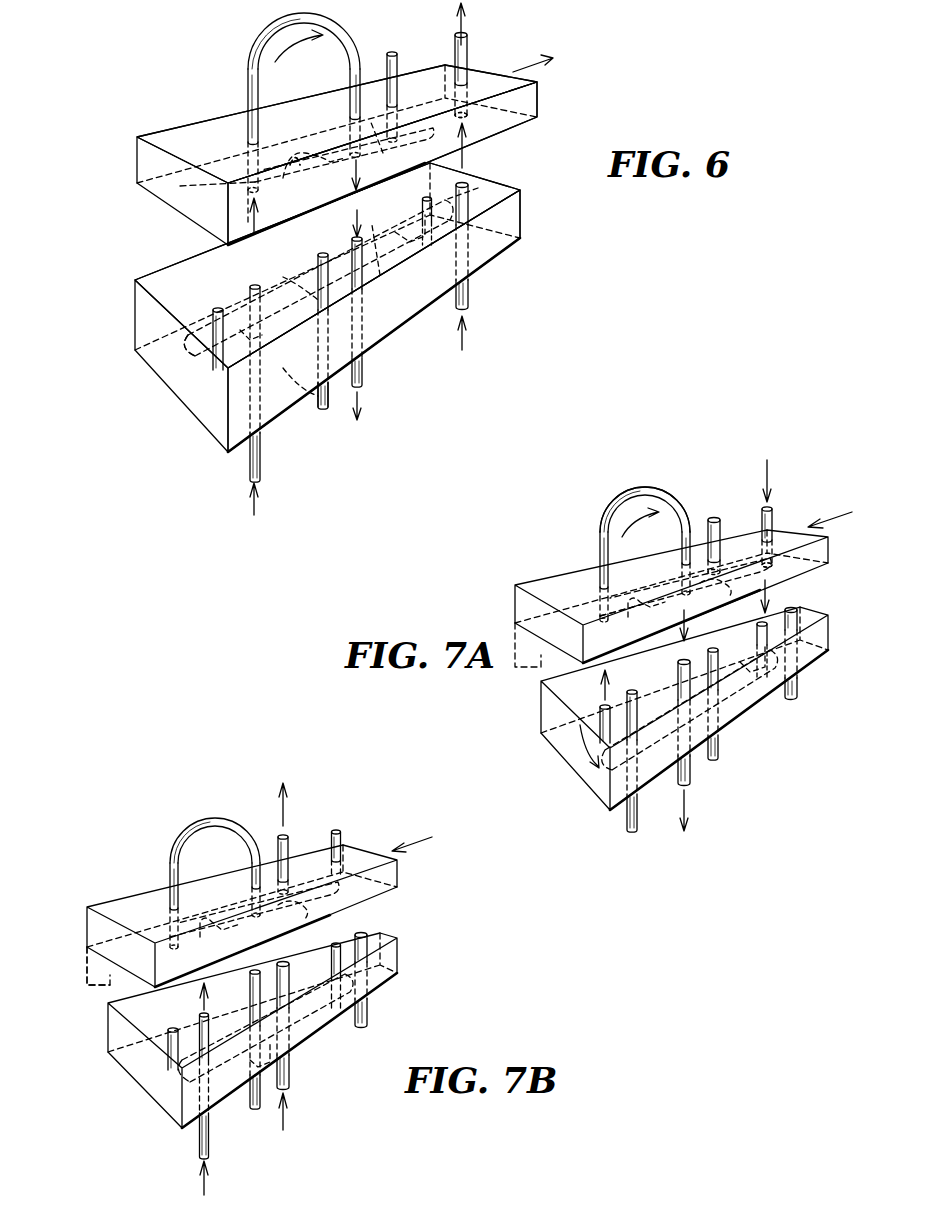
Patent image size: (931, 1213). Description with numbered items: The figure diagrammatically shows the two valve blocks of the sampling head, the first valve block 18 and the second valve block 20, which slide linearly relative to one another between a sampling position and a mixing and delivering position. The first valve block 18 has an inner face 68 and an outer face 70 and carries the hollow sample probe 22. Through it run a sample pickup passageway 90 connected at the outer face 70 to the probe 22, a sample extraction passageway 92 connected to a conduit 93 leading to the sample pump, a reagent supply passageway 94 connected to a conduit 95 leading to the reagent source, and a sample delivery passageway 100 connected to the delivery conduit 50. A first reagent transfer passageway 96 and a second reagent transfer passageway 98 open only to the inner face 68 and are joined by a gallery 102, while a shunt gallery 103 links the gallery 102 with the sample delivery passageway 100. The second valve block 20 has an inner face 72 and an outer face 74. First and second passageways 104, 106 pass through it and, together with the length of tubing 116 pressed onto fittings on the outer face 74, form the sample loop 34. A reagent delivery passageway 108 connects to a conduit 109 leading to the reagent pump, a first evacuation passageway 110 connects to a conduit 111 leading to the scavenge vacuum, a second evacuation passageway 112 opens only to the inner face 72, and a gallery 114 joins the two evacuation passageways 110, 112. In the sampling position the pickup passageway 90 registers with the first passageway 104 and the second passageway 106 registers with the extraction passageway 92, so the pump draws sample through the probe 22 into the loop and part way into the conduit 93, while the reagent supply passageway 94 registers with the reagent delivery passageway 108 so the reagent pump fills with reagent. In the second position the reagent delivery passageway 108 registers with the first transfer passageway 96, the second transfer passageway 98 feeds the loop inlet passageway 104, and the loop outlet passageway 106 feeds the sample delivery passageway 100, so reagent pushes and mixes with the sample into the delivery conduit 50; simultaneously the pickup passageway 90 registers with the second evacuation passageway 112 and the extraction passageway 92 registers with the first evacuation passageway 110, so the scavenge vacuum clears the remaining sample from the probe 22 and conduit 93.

In FIG. 6, the first valve block 18 is at (508, 217).
In FIG. 7A, the first valve block 18 is at (823, 634).
In FIG. 7B, the first valve block 18 is at (392, 955).
In FIG. 6, the second valve block 20 is at (538, 100).
In FIG. 7A, the second valve block 20 is at (820, 553).
In FIG. 7B, the second valve block 20 is at (385, 874).
In FIG. 6, the sample probe 22 is at (248, 468).
In FIG. 7B, the sample probe 22 is at (200, 1143).
In FIG. 7A, the sample loop 34 is at (666, 477).
In FIG. 6, the delivery conduit 50 is at (324, 408).
In FIG. 7A, the delivery conduit 50 is at (690, 773).
In FIG. 6, the inner face of first block 68 is at (202, 302).
In FIG. 6, the outer face of first block 70 is at (502, 256).
In FIG. 6, the inner face of second block 72 is at (528, 124).
In FIG. 6, the outer face of second block 74 is at (212, 154).
In FIG. 6, the sample pickup passageway 90 is at (197, 378).
In FIG. 7B, the sample pickup passageway 90 is at (160, 1062).
In FIG. 6, the sample extraction passageway 92 is at (380, 275).
In FIG. 7B, the sample extraction passageway 92 is at (290, 988).
In FIG. 6, the conduit to sample pump 93 is at (363, 372).
In FIG. 7B, the conduit to sample pump 93 is at (290, 1072).
In FIG. 6, the reagent supply passageway 94 is at (478, 188).
In FIG. 6, the reagent supply conduit 95 is at (470, 291).
In FIG. 6, the first reagent transfer passageway 96 is at (462, 175).
In FIG. 7A, the first reagent transfer passageway 96 is at (766, 680).
In FIG. 6, the second reagent transfer passageway 98 is at (150, 363).
In FIG. 7A, the second reagent transfer passageway 98 is at (598, 748).
In FIG. 6, the sample delivery passageway 100 is at (299, 331).
In FIG. 7A, the sample delivery passageway 100 is at (695, 718).
In FIG. 6, the gallery 102 is at (283, 277).
In FIG. 7A, the gallery 102 is at (665, 688).
In FIG. 6, the shunt gallery 103 is at (283, 368).
In FIG. 7A, the shunt gallery 103 is at (655, 737).
In FIG. 6, the first passageway of sample loop 104 is at (180, 186).
In FIG. 7A, the first passageway of sample loop 104 is at (600, 594).
In FIG. 6, the second passageway of sample loop 106 is at (365, 112).
In FIG. 7A, the second passageway of sample loop 106 is at (692, 535).
In FIG. 6, the reagent delivery passageway 108 is at (475, 92).
In FIG. 7A, the reagent delivery passageway 108 is at (800, 587).
In FIG. 6, the reagent pump conduit 109 is at (467, 50).
In FIG. 7A, the reagent pump conduit 109 is at (772, 512).
In FIG. 6, the first evacuation passageway 110 is at (400, 110).
In FIG. 7B, the first evacuation passageway 110 is at (305, 904).
In FIG. 7B, the scavenge vacuum conduit 111 is at (288, 848).
In FIG. 6, the second evacuation passageway 112 is at (250, 226).
In FIG. 7B, the second evacuation passageway 112 is at (100, 978).
In FIG. 6, the gallery 114 is at (383, 153).
In FIG. 7B, the gallery 114 is at (230, 920).
In FIG. 6, the length of tubing 116 is at (273, 34).
In FIG. 7A, the length of tubing 116 is at (620, 506).